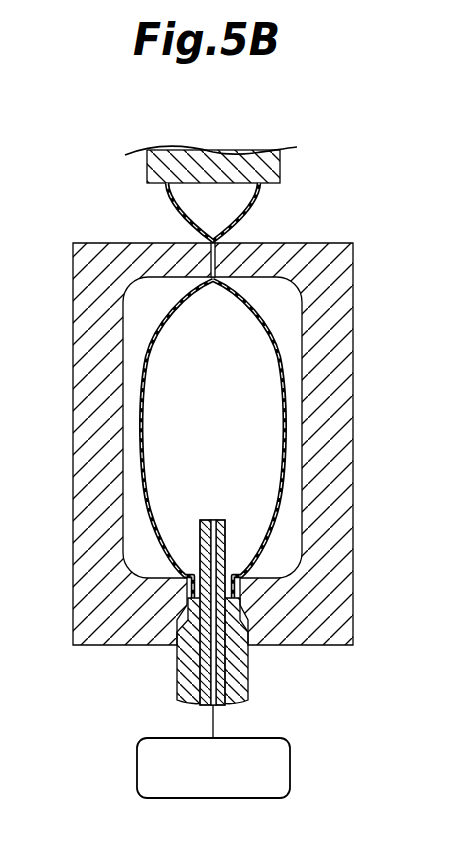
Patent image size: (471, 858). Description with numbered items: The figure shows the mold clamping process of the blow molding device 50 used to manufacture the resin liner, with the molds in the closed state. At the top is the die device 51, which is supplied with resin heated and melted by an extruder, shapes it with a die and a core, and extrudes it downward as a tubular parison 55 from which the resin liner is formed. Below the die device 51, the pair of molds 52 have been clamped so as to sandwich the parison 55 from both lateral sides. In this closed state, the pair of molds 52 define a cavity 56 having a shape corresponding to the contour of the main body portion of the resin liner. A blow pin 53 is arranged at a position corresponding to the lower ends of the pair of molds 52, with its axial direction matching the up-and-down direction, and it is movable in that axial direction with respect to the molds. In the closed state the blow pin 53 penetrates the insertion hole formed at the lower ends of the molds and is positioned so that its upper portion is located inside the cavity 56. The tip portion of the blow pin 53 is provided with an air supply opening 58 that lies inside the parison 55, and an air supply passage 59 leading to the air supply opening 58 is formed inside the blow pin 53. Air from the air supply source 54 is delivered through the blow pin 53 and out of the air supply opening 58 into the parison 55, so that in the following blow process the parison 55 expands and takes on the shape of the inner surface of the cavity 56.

The blow molding device 50 is at (91, 172).
The die device 51 is at (226, 175).
The pair of molds 52 is at (92, 645).
The blow pin 53 is at (198, 686).
The air supply source 54 is at (180, 798).
The parison 55 is at (170, 318).
The cavity 56 is at (225, 413).
The air supply opening 58 is at (212, 527).
The air supply passage 59 is at (199, 527).